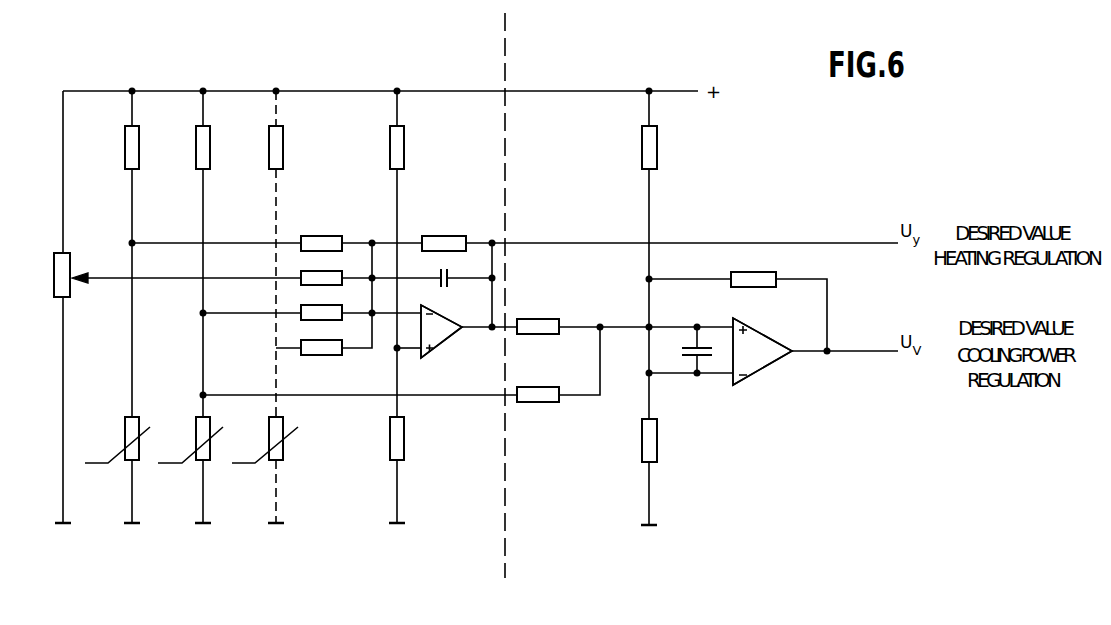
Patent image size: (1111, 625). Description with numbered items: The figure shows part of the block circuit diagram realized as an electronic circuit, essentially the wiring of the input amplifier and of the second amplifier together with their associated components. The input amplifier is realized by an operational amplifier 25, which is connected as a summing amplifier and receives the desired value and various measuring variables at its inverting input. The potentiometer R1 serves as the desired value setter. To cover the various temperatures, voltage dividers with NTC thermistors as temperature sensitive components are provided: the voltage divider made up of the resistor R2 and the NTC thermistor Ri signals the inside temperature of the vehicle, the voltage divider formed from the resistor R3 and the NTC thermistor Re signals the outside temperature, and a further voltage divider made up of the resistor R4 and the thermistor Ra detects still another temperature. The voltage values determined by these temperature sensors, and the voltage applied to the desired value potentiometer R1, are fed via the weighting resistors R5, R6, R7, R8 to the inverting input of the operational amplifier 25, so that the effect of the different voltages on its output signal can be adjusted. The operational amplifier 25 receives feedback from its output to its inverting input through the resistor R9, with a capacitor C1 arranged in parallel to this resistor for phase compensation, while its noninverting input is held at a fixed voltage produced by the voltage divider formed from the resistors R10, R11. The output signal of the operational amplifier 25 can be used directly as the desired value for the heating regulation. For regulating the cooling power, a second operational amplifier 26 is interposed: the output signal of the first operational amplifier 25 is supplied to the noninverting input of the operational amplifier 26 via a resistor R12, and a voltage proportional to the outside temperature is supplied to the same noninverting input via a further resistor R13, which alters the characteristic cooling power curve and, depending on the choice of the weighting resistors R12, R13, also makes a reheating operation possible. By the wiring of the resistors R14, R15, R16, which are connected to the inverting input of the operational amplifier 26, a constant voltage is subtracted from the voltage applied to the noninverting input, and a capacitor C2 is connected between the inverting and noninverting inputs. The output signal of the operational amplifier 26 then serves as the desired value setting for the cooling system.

The potentiometer R1 is at (70, 288).
The resistor R2 is at (139, 151).
The resistor R3 is at (210, 151).
The resistor R4 is at (283, 151).
The weighting resistor R5 is at (326, 236).
The weighting resistor R6 is at (305, 272).
The weighting resistor R7 is at (305, 307).
The weighting resistor R8 is at (329, 366).
The feedback resistor R9 is at (434, 236).
The resistor R10 is at (404, 151).
The resistor R11 is at (417, 435).
The resistor R12 is at (537, 319).
The further resistor R13 is at (548, 402).
The resistor R14 is at (657, 151).
The resistor R15 is at (657, 448).
The resistor R16 is at (760, 287).
The capacitor C1 is at (447, 282).
The capacitor C2 is at (703, 352).
The operational amplifier 25 is at (441, 330).
The second operational amplifier 26 is at (762, 359).
The NTC thermistor Ri is at (126, 424).
The NTC thermistor Re is at (197, 424).
The NTC thermistor Ra is at (270, 424).